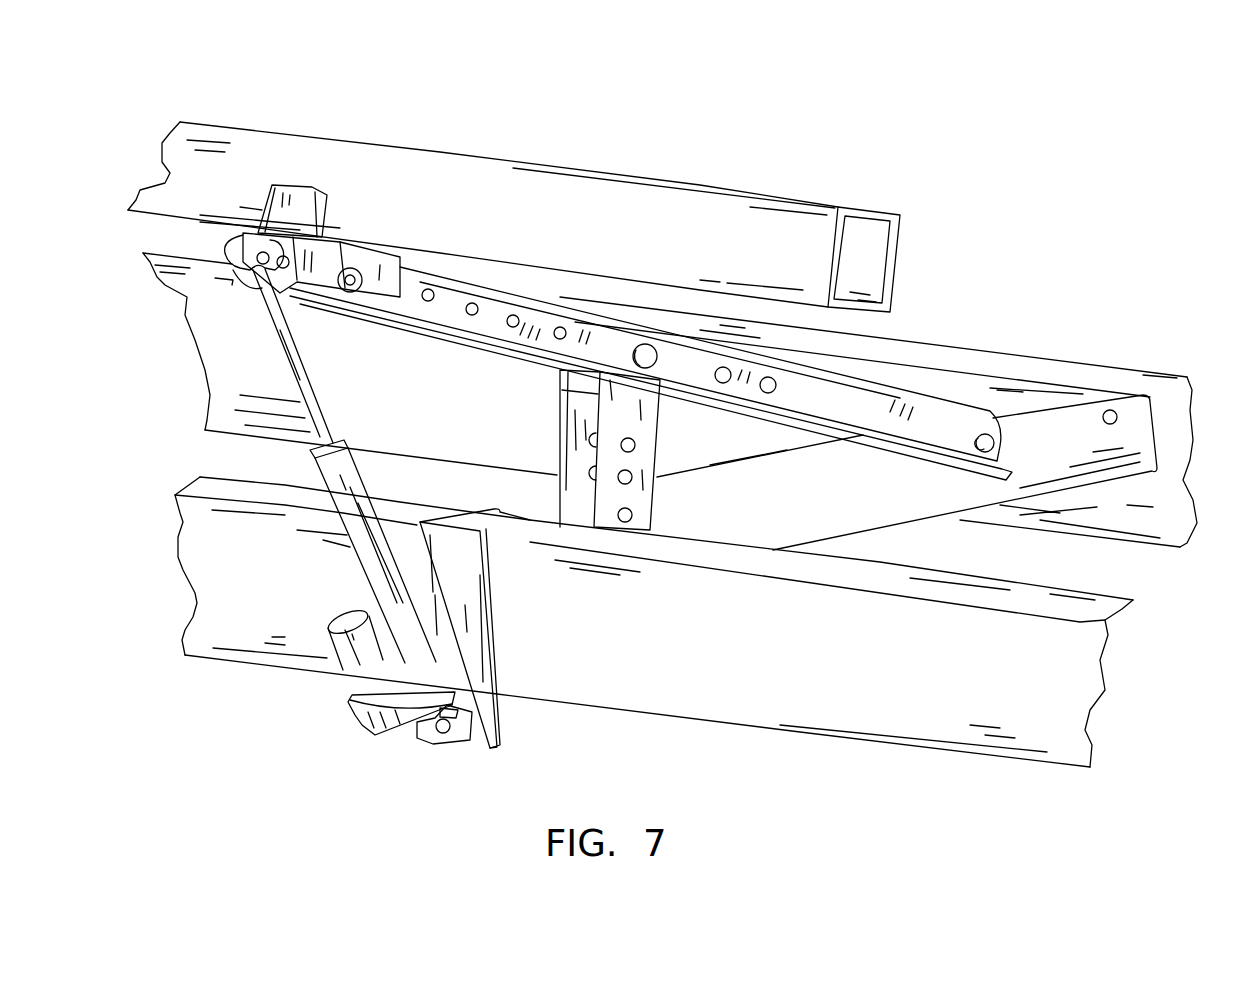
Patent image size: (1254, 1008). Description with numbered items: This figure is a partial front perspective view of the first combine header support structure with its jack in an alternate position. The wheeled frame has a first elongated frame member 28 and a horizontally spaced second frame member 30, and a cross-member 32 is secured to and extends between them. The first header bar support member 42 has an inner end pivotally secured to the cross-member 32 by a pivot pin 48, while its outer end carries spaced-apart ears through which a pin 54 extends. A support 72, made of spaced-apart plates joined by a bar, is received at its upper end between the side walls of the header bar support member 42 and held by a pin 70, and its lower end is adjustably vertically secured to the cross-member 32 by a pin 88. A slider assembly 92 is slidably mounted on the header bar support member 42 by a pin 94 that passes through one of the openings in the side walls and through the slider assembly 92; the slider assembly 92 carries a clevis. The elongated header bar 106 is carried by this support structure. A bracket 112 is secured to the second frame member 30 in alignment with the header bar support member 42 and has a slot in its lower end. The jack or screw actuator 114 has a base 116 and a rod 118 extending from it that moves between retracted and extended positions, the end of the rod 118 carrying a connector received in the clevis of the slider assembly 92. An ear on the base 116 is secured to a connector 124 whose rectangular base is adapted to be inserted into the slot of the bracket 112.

The pin 70 is at (655, 365).
The header bar 106 is at (868, 250).
The cross-member 32 is at (1081, 418).
The first frame member 28 is at (1123, 507).
The second frame member 30 is at (863, 700).
The first header bar support member 42 is at (870, 388).
The pivot pin 48 is at (989, 452).
The pin 88 is at (633, 513).
The slider assembly 92 is at (336, 206).
The pin 94 is at (352, 272).
The pin 54 is at (230, 285).
The rod 118 is at (293, 373).
The jack or screw actuator 114 is at (345, 558).
The base 116 is at (393, 717).
The connector 124 is at (422, 798).
The bracket 112 is at (468, 653).
The support 72 is at (540, 393).